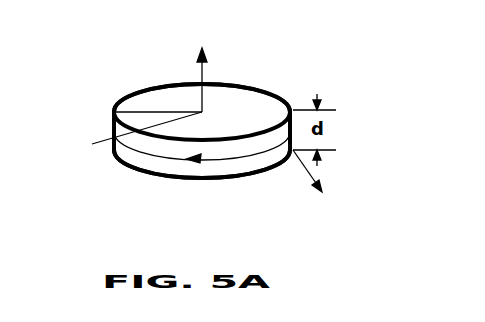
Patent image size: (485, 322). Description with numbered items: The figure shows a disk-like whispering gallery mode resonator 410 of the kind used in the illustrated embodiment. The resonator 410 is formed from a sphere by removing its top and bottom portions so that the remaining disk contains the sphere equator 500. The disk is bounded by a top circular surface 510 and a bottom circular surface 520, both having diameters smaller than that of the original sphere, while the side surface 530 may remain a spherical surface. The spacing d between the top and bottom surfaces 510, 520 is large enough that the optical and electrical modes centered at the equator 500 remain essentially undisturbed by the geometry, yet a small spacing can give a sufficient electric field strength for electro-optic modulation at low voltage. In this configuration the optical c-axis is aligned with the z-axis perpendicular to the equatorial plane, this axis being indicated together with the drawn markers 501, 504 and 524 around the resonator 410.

The whispering gallery mode resonator 410 is at (104, 28).
The sphere equator 500 is at (229, 158).
The z axis 501 is at (201, 68).
The radial direction 504 is at (120, 192).
The top circular surface 510 is at (273, 93).
The bottom circular surface 520 is at (188, 177).
The tangential direction 524 is at (322, 183).
The side surface 530 is at (116, 126).